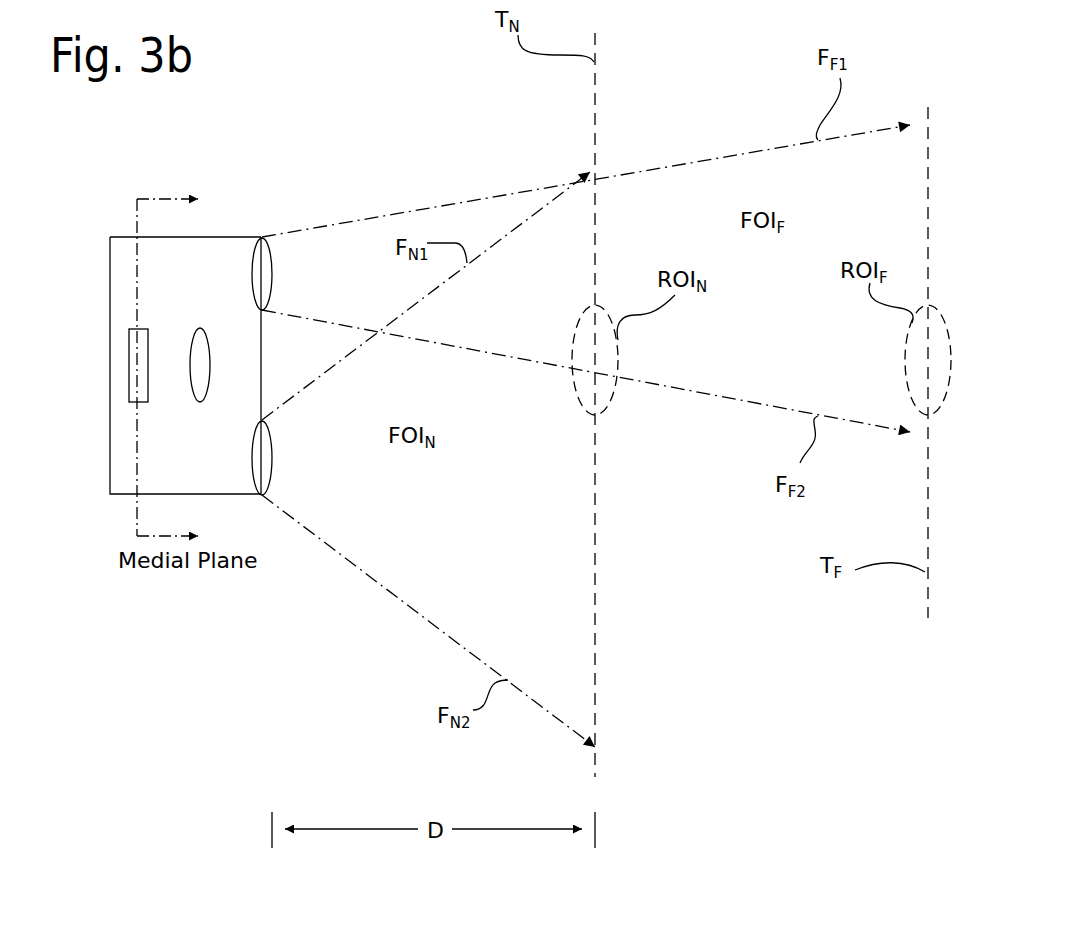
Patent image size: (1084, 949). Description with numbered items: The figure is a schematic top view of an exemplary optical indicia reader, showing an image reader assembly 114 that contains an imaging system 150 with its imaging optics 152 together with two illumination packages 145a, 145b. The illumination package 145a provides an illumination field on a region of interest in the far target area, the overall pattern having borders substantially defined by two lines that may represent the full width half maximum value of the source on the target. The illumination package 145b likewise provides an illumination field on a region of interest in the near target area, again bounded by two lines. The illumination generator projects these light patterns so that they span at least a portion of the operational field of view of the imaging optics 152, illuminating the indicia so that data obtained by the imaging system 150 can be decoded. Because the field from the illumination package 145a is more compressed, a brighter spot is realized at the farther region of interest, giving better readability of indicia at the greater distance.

The image reader assembly 114 is at (232, 201).
The illumination package 145a is at (267, 250).
The illumination package 145b is at (268, 470).
The imaging system 150 is at (130, 353).
The imaging optics 152 is at (203, 337).